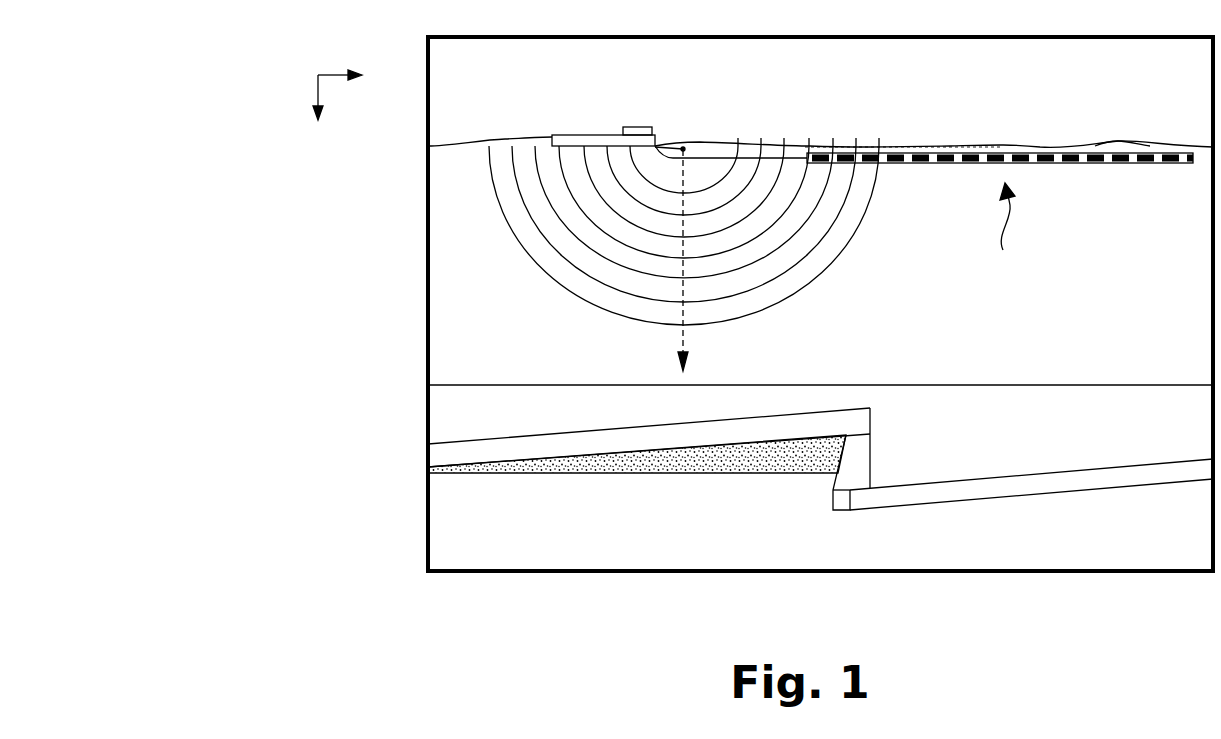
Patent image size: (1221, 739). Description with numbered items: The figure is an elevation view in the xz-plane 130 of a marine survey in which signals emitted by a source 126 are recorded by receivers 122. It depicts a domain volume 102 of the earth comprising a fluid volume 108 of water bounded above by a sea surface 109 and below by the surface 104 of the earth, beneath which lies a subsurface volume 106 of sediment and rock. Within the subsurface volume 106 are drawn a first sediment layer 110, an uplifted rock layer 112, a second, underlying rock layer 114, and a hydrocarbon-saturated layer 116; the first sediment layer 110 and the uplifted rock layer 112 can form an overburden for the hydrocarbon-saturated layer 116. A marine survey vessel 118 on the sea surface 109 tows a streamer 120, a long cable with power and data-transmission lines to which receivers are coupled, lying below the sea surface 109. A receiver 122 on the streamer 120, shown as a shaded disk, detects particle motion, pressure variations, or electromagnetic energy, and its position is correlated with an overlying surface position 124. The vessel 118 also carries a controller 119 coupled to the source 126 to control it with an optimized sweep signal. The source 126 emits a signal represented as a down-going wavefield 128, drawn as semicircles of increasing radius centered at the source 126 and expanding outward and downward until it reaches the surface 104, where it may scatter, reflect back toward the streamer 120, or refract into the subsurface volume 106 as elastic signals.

The domain volume 102 is at (326, 207).
The surface of the earth 104 is at (483, 385).
The subsurface volume 106 is at (447, 403).
The fluid volume 108 is at (447, 290).
The sea surface 109 is at (953, 146).
The first sediment layer 110 is at (1078, 443).
The uplifted rock layer 112 is at (447, 461).
The second, underlying rock layer 114 is at (553, 557).
The hydrocarbon-saturated layer 116 is at (648, 474).
The marine survey vessel 118 is at (595, 135).
The controller 119 is at (642, 127).
The streamer 120 is at (1018, 229).
The receiver 122 is at (1118, 166).
The surface position 124 is at (1118, 142).
The source 126 is at (686, 147).
The down-going wavefield 128 is at (843, 250).
The xz-plane 130 is at (318, 75).